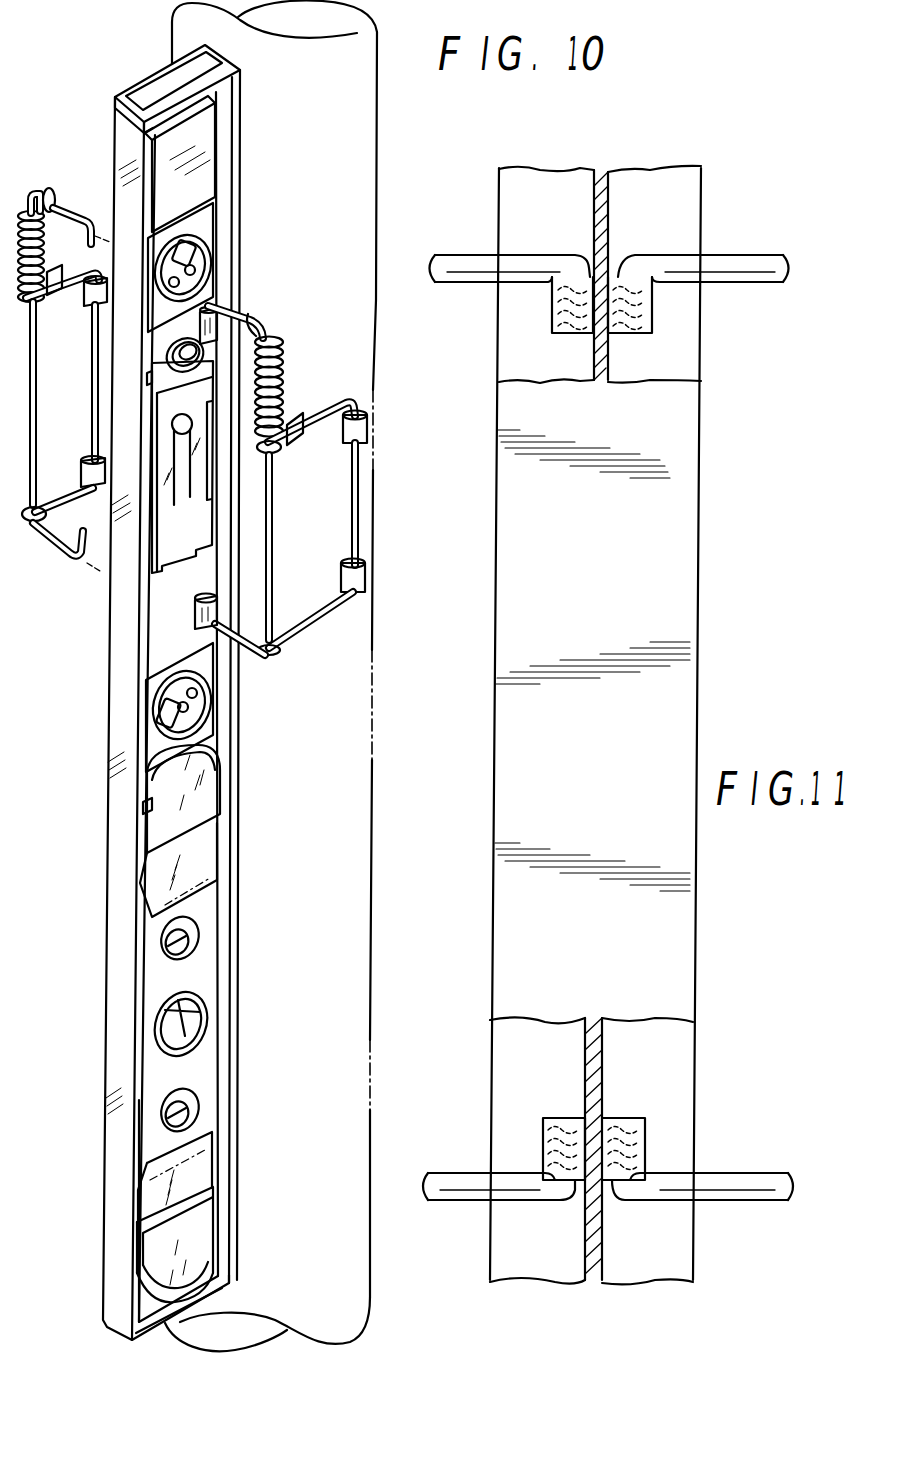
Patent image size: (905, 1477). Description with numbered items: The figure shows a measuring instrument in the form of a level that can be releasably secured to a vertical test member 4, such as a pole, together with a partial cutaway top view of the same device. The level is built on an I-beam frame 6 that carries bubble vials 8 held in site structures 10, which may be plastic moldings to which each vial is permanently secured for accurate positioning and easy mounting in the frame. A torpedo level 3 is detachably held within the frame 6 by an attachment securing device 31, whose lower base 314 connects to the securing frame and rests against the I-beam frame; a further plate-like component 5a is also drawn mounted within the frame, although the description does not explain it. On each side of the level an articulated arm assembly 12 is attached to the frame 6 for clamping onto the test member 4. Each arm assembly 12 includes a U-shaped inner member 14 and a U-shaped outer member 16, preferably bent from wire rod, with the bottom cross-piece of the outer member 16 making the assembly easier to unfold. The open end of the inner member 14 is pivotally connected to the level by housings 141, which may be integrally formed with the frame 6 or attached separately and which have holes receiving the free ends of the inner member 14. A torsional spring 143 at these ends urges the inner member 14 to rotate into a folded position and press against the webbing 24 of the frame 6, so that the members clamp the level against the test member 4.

In FIG. 10, the torpedo level 3 is at (160, 1073).
In FIG. 10, the test member 4 is at (378, 194).
In FIG. 10, the mounting plate 5a is at (167, 538).
In FIG. 10, the I-beam frame 6 is at (143, 92).
In FIG. 10, the bubble vial 8 is at (165, 707).
In FIG. 10, the site structure 10 is at (153, 745).
In FIG. 10, the articulated arm assembly 12 is at (269, 316).
In FIG. 10, the U-shaped inner member 14 is at (262, 660).
In FIG. 11, the U-shaped inner member 14 is at (462, 253).
In FIG. 10, the U-shaped outer member 16 is at (318, 615).
In FIG. 11, the webbing 24 is at (612, 207).
In FIG. 10, the attachment securing device 31 is at (165, 815).
In FIG. 10, the housing 141 is at (193, 612).
In FIG. 11, the housing 141 is at (550, 317).
In FIG. 11, the torsional spring 143 is at (653, 303).
In FIG. 10, the lower base 314 is at (207, 798).